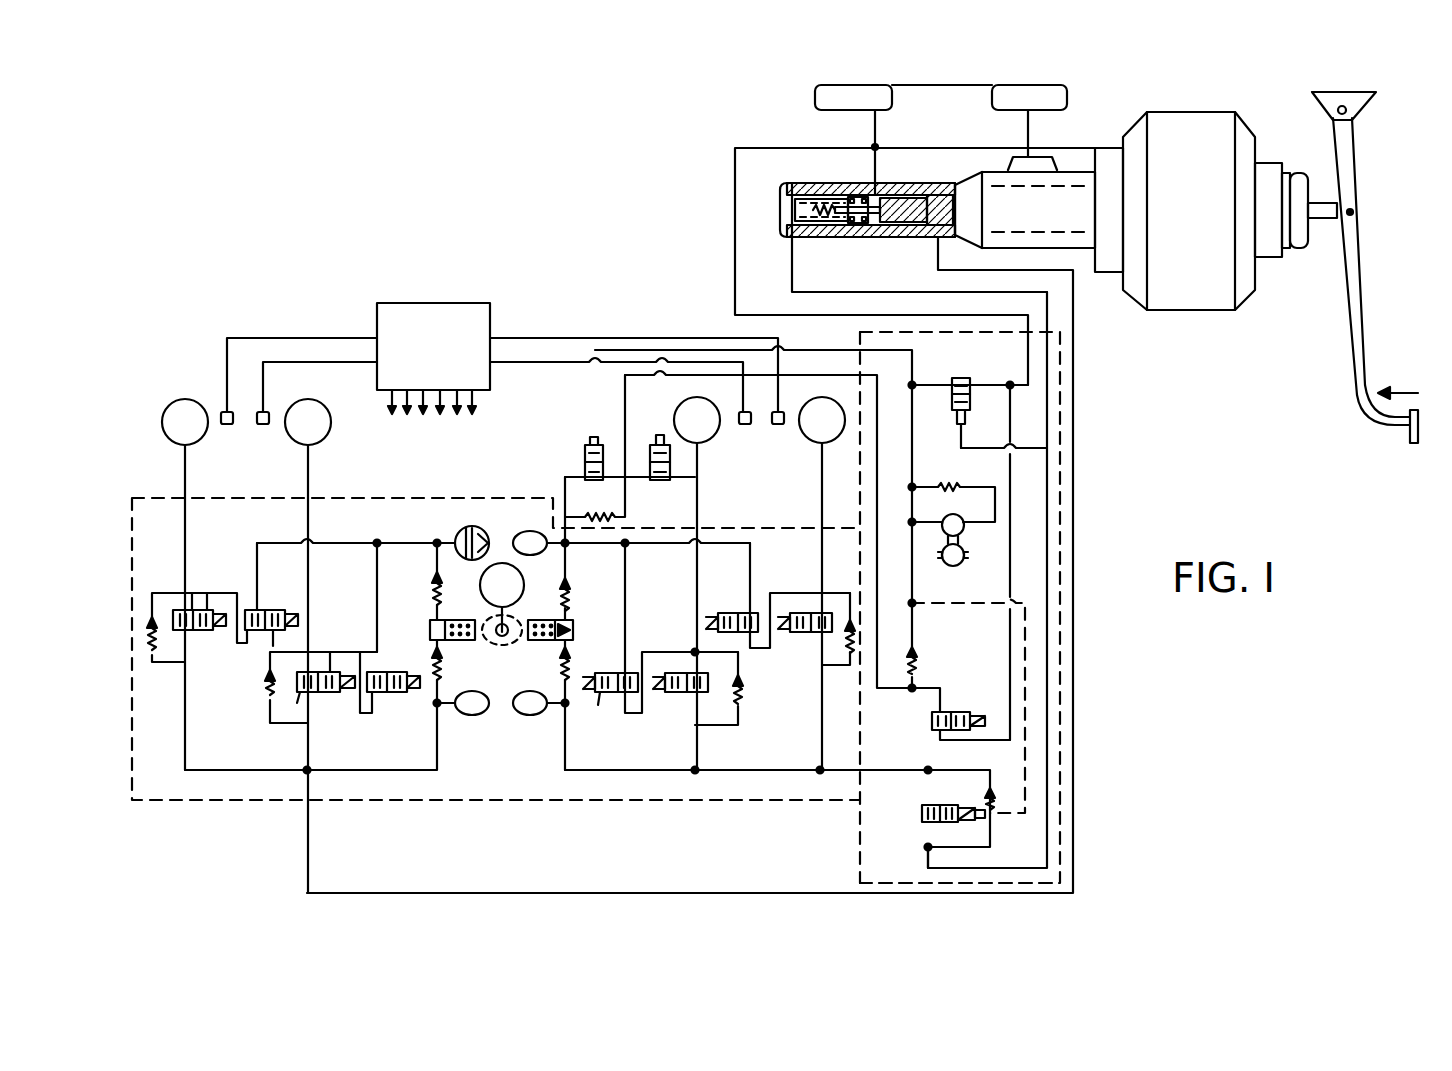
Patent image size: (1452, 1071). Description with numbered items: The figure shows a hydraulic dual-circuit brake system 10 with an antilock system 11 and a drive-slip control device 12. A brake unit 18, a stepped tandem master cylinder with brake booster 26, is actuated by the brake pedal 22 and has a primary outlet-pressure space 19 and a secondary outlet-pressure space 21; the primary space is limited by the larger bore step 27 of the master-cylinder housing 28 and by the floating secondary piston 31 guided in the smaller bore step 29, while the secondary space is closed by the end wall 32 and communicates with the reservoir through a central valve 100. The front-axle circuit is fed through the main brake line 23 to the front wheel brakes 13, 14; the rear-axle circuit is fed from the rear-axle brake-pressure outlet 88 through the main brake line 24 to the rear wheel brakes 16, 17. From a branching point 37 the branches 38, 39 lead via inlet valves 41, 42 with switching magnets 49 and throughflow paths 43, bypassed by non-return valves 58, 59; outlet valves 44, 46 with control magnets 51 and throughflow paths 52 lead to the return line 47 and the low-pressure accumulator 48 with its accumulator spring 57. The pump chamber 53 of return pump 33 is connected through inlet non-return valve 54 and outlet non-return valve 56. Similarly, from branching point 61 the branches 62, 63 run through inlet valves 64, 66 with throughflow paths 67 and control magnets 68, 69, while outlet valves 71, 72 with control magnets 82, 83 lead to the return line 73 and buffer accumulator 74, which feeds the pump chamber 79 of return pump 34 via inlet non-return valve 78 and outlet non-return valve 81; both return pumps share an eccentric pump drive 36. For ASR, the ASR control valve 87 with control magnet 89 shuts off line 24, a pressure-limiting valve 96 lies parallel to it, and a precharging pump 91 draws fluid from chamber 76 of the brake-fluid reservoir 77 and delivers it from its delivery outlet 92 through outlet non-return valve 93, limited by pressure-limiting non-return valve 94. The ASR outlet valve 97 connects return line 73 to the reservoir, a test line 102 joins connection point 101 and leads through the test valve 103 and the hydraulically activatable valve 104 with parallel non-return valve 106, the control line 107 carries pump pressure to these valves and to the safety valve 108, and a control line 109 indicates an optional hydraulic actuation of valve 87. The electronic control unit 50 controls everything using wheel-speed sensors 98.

The hydraulic dual-circuit brake system 10 is at (653, 222).
The antilock system 11 is at (518, 780).
The drive-slip control device 12 is at (875, 814).
The left front wheel brake 13 is at (200, 440).
The right front wheel brake 14 is at (293, 440).
The left rear wheel brake 16 is at (713, 440).
The right rear wheel brake 17 is at (810, 441).
The brake unit 18 is at (1058, 168).
The primary outlet-pressure space 19 is at (943, 193).
The secondary outlet-pressure space 21 is at (797, 200).
The brake pedal 22 is at (1352, 308).
The main brake line of front-axle brake circuit 23 is at (1065, 400).
The main brake line of rear-axle brake circuit 24 is at (1043, 387).
The brake booster 26 is at (1187, 312).
The larger bore step 27 is at (1020, 192).
The master-cylinder housing 28 is at (920, 230).
The smaller bore step 29 is at (840, 198).
The secondary piston 31 is at (867, 227).
The end wall 32 is at (777, 190).
The return piston pump 33 is at (462, 619).
The return piston pump 34 is at (548, 619).
The eccentric pump drive 36 is at (525, 531).
The branching point 37 is at (311, 772).
The brake-line branch 38 is at (186, 757).
The brake-line branch 39 is at (309, 752).
The inlet valve 41 is at (193, 632).
The inlet valve 42 is at (283, 713).
The throughflow path 43 is at (180, 592).
The outlet valve 44 is at (244, 605).
The outlet valve 46 is at (380, 694).
The return line 47 is at (338, 541).
The low-pressure buffer accumulator 48 is at (456, 532).
The switching magnet 49 is at (221, 592).
The electronic control unit 50 is at (436, 320).
The control magnet 51 is at (292, 610).
The throughflow path 52 is at (268, 605).
The pump chamber 53 is at (430, 631).
The inlet non-return valve 54 is at (433, 589).
The outlet non-return valve 56 is at (440, 660).
The accumulator spring 57 is at (479, 528).
The non-return valve 58 is at (152, 663).
The non-return valve 59 is at (265, 683).
The branching point 61 is at (822, 773).
The brake-line branch 62 is at (698, 750).
The brake-line branch 63 is at (819, 750).
The inlet valve 64 is at (690, 695).
The inlet valve 66 is at (808, 634).
The throughflow path 67 is at (710, 683).
The control magnet 68 is at (658, 700).
The control magnet 69 is at (795, 634).
The outlet valve 71 is at (600, 695).
The outlet valve 72 is at (735, 610).
The return line 73 is at (568, 556).
The buffer accumulator 74 is at (537, 530).
The chamber of brake-fluid reservoir 76 is at (847, 110).
The brake-fluid reservoir 77 is at (1066, 88).
The inlet non-return valve 78 is at (573, 591).
The pump chamber 79 is at (575, 630).
The outlet non-return valve 81 is at (560, 661).
The control magnet 82 is at (660, 628).
The control magnet 83 is at (712, 618).
The ASR control valve 87 is at (920, 815).
The rear-axle brake-pressure outlet 88 is at (795, 238).
The control magnet 89 is at (962, 823).
The precharging pump 91 is at (962, 526).
The delivery outlet 92 is at (912, 518).
The outlet non-return valve 93 is at (912, 650).
The pressure-limiting non-return valve 94 is at (940, 485).
The pressure-limiting valve 96 is at (978, 794).
The ASR outlet valve 97 is at (930, 719).
The wheel-speed sensors 98 is at (262, 411).
The central valve 100 is at (790, 212).
The connection point 101 is at (510, 535).
The test line 102 is at (805, 376).
The test valve 103 is at (660, 482).
The hydraulically activatable valve 104 is at (585, 446).
The non-return valve 106 is at (595, 507).
The control line 107 is at (795, 347).
The safety valve 108 is at (958, 374).
The control line 109 is at (940, 612).